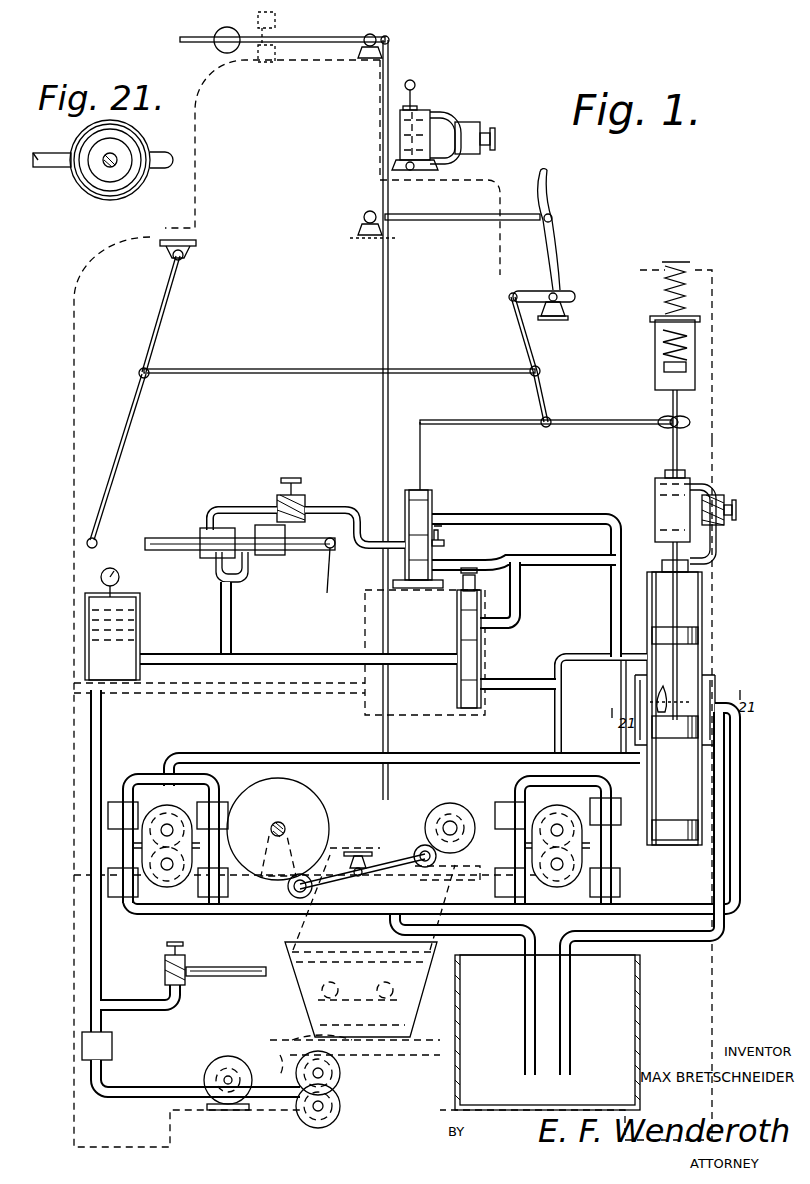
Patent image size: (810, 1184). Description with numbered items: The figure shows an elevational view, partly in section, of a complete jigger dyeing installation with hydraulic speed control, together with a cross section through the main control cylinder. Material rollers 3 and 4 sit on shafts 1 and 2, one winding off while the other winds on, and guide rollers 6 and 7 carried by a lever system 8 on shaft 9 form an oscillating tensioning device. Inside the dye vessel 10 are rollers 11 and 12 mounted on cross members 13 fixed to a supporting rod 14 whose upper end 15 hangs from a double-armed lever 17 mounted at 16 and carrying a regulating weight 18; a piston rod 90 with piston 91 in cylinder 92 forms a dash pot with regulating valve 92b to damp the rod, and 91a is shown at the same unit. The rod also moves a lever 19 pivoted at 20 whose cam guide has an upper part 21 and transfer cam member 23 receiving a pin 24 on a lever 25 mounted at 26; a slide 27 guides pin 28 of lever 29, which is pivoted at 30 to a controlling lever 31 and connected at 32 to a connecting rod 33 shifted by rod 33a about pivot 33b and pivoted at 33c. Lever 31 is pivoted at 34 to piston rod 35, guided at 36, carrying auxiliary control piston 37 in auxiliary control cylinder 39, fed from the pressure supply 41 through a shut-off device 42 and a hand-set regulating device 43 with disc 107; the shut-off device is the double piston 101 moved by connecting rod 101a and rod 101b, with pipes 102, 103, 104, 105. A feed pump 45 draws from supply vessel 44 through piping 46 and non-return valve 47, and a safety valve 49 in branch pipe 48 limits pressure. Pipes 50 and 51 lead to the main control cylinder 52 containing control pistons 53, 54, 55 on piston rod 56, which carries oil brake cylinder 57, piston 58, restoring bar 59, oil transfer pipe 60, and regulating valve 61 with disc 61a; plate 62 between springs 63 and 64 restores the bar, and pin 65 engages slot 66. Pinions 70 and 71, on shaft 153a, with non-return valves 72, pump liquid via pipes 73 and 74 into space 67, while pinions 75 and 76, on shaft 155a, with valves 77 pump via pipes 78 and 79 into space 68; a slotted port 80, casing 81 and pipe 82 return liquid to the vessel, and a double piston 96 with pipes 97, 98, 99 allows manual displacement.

In FIG. 1, the shaft 1 is at (287, 828).
In FIG. 1, the shaft 2 is at (452, 820).
In FIG. 1, the material roller 3 is at (300, 810).
In FIG. 1, the material roller 4 is at (436, 820).
In FIG. 1, the guide roller 6 is at (310, 894).
In FIG. 1, the guide roller 7 is at (420, 850).
In FIG. 1, the lever system 8 is at (406, 866).
In FIG. 1, the shaft 9 is at (358, 878).
In FIG. 1, the vessel 10 is at (440, 944).
In FIG. 1, the roller 11 is at (300, 998).
In FIG. 1, the roller 12 is at (386, 993).
In FIG. 1, the cross members 13 is at (340, 992).
In FIG. 1, the supporting rod 14 is at (382, 285).
In FIG. 1, the upper end of supporting rod 15 is at (392, 40).
In FIG. 1, the mounting of double-armed lever 16 is at (371, 33).
In FIG. 1, the double-armed lever 17 is at (318, 38).
In FIG. 1, the regulating weight 18 is at (222, 48).
In FIG. 1, the lever 19 is at (440, 221).
In FIG. 1, the pivot 20 is at (362, 215).
In FIG. 1, the upper part of cam guide 21 is at (552, 180).
In FIG. 1, the transfer cam member 23 is at (562, 222).
In FIG. 1, the pin 24 is at (545, 224).
In FIG. 1, the lever 25 is at (560, 242).
In FIG. 1, the mounting of lever 26 is at (558, 278).
In FIG. 1, the slide 27 is at (570, 294).
In FIG. 1, the pin 28 is at (510, 294).
In FIG. 1, the lever 29 is at (525, 335).
In FIG. 1, the pivot 30 is at (550, 418).
In FIG. 1, the controlling lever 31 is at (490, 420).
In FIG. 1, the connection point 32 is at (540, 367).
In FIG. 1, the connecting rod 33 is at (424, 369).
In FIG. 1, the rod 33a is at (146, 397).
In FIG. 1, the pivot 33b is at (186, 257).
In FIG. 1, the pivot 33c is at (150, 368).
In FIG. 1, the pivot 34 is at (420, 420).
In FIG. 1, the piston rod 35 is at (424, 455).
In FIG. 1, the guide 36 is at (432, 492).
In FIG. 1, the auxiliary control piston 37 is at (434, 502).
In FIG. 1, the auxiliary control cylinder 39 is at (445, 543).
In FIG. 1, the pressure liquid supply 41 is at (125, 658).
In FIG. 1, the shut-off device 42 is at (182, 540).
In FIG. 1, the regulating device 43 is at (300, 490).
In FIG. 1, the supply vessel 44 is at (641, 964).
In FIG. 1, the feed pump 45 is at (336, 1068).
In FIG. 1, the piping 46 is at (145, 1088).
In FIG. 1, the non-return valve 47 is at (110, 1044).
In FIG. 1, the branch pipe 48 is at (128, 1005).
In FIG. 1, the safety valve 49 is at (186, 962).
In FIG. 1, the pipe 50 is at (540, 514).
In FIG. 1, the pipe 51 is at (548, 558).
In FIG. 21, the main control cylinder 52 is at (93, 197).
In FIG. 1, the main control cylinder 52 is at (705, 576).
In FIG. 1, the control piston 53 is at (700, 636).
In FIG. 21, the control piston 54 is at (112, 170).
In FIG. 1, the control piston 54 is at (700, 726).
In FIG. 1, the control piston 55 is at (705, 830).
In FIG. 21, the piston rod 56 is at (115, 157).
In FIG. 1, the piston rod 56 is at (690, 655).
In FIG. 1, the oil brake cylinder 57 is at (655, 512).
In FIG. 1, the piston 58 is at (655, 490).
In FIG. 1, the restoring bar 59 is at (670, 450).
In FIG. 1, the oil transfer pipe 60 is at (703, 490).
In FIG. 1, the regulating valve 61 is at (722, 494).
In FIG. 1, the disc 61a is at (738, 510).
In FIG. 1, the plate 62 is at (652, 333).
In FIG. 1, the spring 63 is at (662, 292).
In FIG. 1, the spring 64 is at (664, 356).
In FIG. 1, the pin 65 is at (668, 422).
In FIG. 1, the slot 66 is at (658, 426).
In FIG. 1, the space 67 is at (700, 760).
In FIG. 21, the space 68 is at (125, 175).
In FIG. 1, the space 68 is at (702, 670).
In FIG. 1, the pinion 70 is at (172, 822).
In FIG. 1, the pinion 71 is at (160, 882).
In FIG. 1, the non-return valves 72 is at (212, 815).
In FIG. 1, the pipe 73 is at (268, 916).
In FIG. 21, the pipe 74 is at (52, 167).
In FIG. 1, the pipe 74 is at (430, 752).
In FIG. 1, the pinion 75 is at (600, 752).
In FIG. 1, the pinion 76 is at (556, 895).
In FIG. 1, the non-return valves 77 is at (605, 811).
In FIG. 1, the pipe 78 is at (472, 880).
In FIG. 1, the pipe 79 is at (552, 707).
In FIG. 21, the slotted port 80 is at (94, 143).
In FIG. 1, the slotted port 80 is at (705, 696).
In FIG. 21, the casing 81 is at (85, 186).
In FIG. 1, the casing 81 is at (640, 700).
In FIG. 21, the pipe 82 is at (163, 170).
In FIG. 1, the pipe 82 is at (742, 838).
In FIG. 1, the piston rod 90 is at (416, 84).
In FIG. 1, the piston 91 is at (398, 136).
In FIG. 1, the valve port 91a is at (440, 162).
In FIG. 1, the cylinder 92 is at (442, 115).
In FIG. 1, the regulating valve 92b is at (482, 130).
In FIG. 1, the double piston 96 is at (460, 620).
In FIG. 1, the inlet/exhaust pipe 97 is at (305, 656).
In FIG. 1, the inlet/exhaust pipe 98 is at (521, 590).
In FIG. 1, the inlet/exhaust pipe 99 is at (522, 679).
In FIG. 1, the double piston 101 is at (175, 552).
In FIG. 1, the connecting rod 101a is at (112, 540).
In FIG. 1, the rod 101b is at (324, 574).
In FIG. 1, the supply/exhaust pipe 102 is at (233, 620).
In FIG. 1, the supply/exhaust pipe 103 is at (215, 570).
In FIG. 1, the supply/exhaust pipe 104 is at (245, 566).
In FIG. 1, the supply/exhaust pipe 105 is at (218, 512).
In FIG. 1, the disc 107 is at (290, 476).
In FIG. 1, the shaft 153a is at (165, 828).
In FIG. 1, the shaft 155a is at (555, 828).